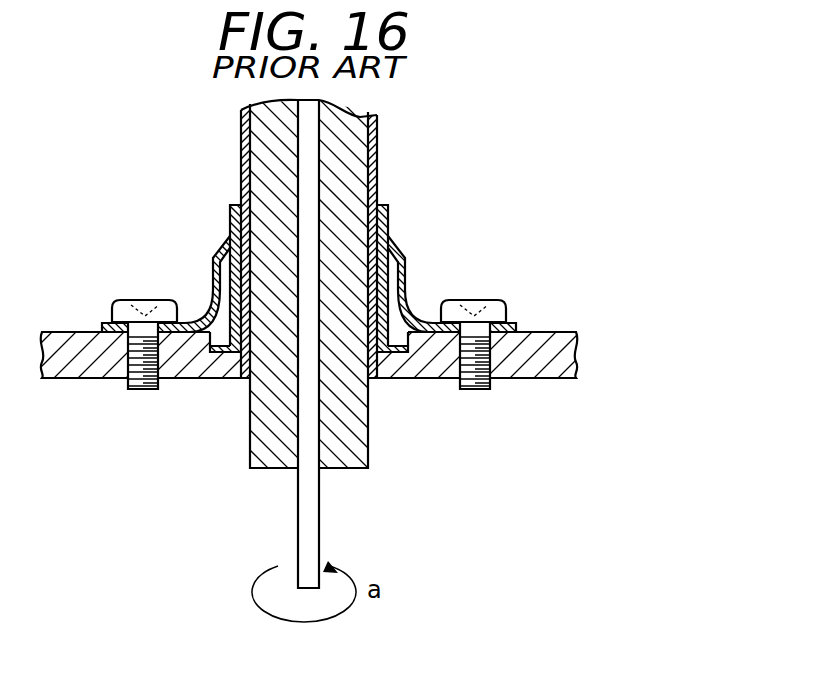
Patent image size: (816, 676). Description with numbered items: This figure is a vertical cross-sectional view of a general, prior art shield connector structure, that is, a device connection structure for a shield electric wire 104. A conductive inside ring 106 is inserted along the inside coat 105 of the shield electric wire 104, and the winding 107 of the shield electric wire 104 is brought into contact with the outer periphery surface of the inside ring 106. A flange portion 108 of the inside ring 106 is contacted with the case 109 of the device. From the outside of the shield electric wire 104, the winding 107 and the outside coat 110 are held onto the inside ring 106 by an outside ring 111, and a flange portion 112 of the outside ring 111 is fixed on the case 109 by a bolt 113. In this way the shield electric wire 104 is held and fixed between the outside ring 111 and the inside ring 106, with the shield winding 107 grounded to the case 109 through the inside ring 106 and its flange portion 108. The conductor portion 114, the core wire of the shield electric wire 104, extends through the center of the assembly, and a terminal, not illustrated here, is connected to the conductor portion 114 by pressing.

The shield electric wire 104 is at (238, 165).
The inside coat 105 is at (262, 445).
The inside ring 106 is at (406, 260).
The winding 107 is at (392, 232).
The flange portion of the inside ring 108 is at (397, 353).
The case 109 is at (548, 331).
The outside coat 110 is at (381, 140).
The outside ring 111 is at (412, 288).
The flange portion of the outside ring 112 is at (517, 328).
The bolt 113 is at (492, 302).
The conductor portion 114 is at (312, 522).